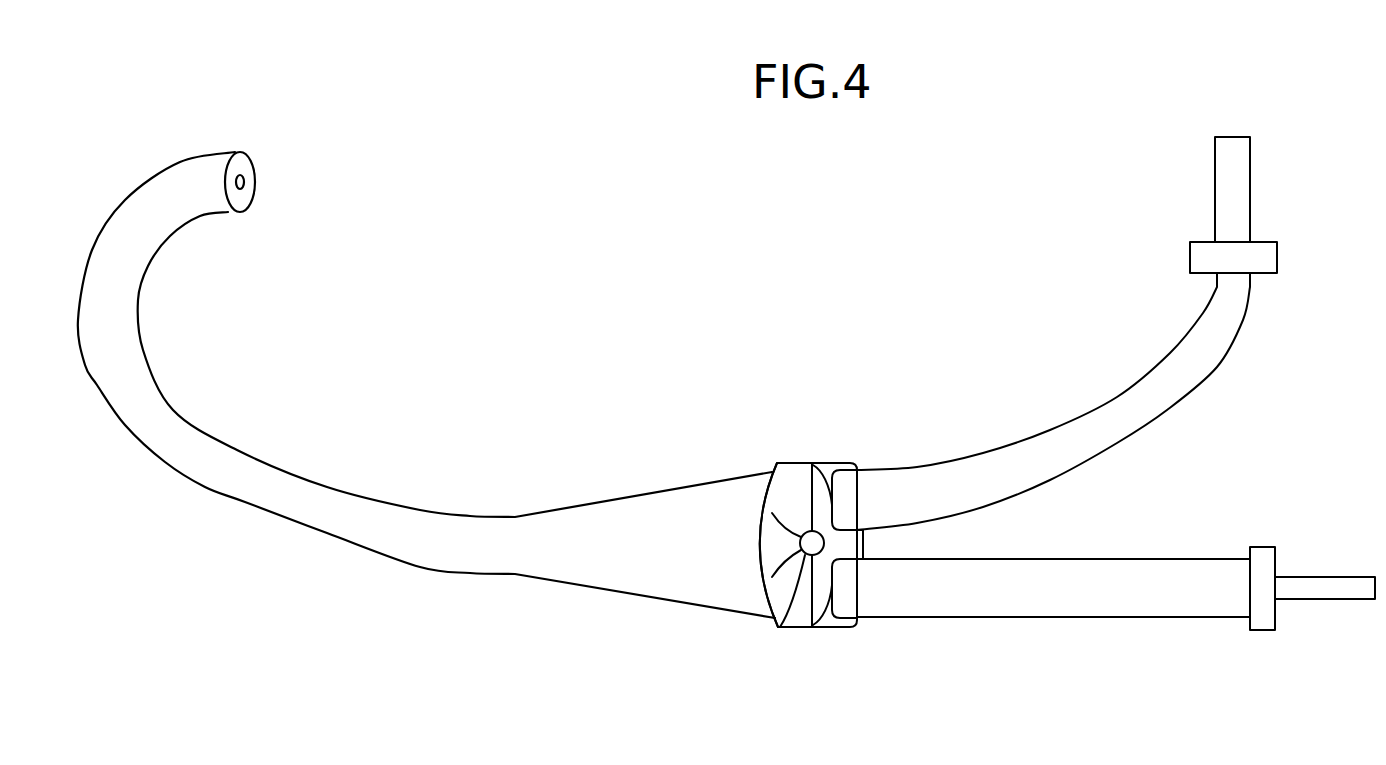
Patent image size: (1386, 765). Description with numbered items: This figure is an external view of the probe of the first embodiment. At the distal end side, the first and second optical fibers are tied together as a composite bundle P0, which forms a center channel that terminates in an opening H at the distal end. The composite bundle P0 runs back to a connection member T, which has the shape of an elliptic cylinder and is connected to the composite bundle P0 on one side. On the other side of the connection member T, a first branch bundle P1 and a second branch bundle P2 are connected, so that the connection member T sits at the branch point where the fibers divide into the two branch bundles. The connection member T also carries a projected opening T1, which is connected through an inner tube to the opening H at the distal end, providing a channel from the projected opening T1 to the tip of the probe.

The opening H is at (244, 182).
The composite bundle P0 is at (370, 500).
The first branch bundle P1 is at (1148, 428).
The second branch bundle P2 is at (1148, 618).
The connection member T is at (808, 460).
The projected opening T1 is at (780, 622).